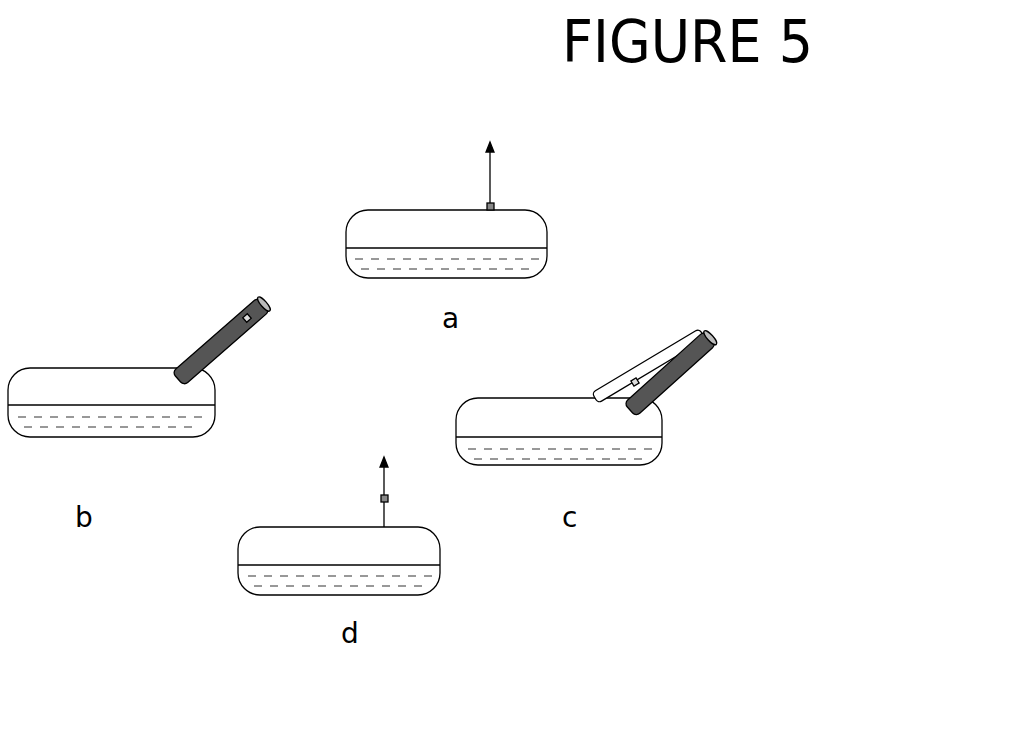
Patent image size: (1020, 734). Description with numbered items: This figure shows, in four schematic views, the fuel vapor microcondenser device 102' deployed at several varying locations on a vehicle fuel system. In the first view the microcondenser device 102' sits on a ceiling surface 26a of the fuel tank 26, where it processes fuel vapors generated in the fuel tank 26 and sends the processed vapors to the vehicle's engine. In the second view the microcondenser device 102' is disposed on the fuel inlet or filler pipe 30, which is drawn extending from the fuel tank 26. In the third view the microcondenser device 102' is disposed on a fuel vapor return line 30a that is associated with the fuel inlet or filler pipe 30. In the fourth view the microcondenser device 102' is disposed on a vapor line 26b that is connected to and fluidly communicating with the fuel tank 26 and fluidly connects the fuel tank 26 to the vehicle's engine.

The fuel tank 26 is at (547, 233).
The ceiling surface 26a is at (430, 218).
The vapor line 26b is at (390, 477).
The microcondenser device 102' is at (443, 328).
The fuel inlet or filler pipe 30 is at (213, 365).
The fuel vapor return line 30a is at (663, 352).